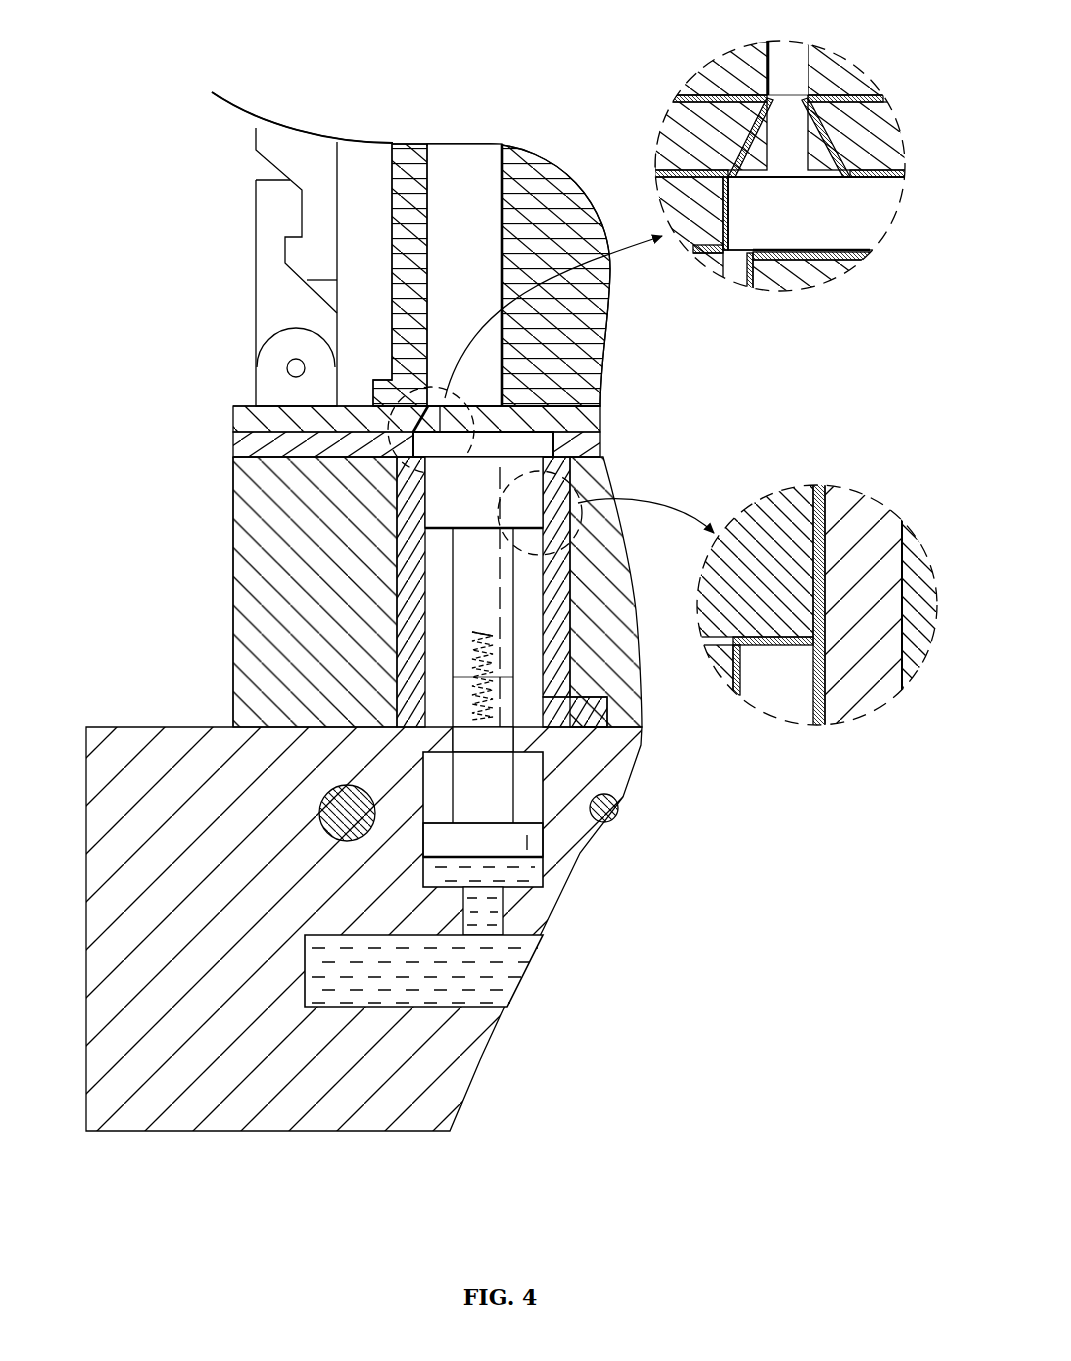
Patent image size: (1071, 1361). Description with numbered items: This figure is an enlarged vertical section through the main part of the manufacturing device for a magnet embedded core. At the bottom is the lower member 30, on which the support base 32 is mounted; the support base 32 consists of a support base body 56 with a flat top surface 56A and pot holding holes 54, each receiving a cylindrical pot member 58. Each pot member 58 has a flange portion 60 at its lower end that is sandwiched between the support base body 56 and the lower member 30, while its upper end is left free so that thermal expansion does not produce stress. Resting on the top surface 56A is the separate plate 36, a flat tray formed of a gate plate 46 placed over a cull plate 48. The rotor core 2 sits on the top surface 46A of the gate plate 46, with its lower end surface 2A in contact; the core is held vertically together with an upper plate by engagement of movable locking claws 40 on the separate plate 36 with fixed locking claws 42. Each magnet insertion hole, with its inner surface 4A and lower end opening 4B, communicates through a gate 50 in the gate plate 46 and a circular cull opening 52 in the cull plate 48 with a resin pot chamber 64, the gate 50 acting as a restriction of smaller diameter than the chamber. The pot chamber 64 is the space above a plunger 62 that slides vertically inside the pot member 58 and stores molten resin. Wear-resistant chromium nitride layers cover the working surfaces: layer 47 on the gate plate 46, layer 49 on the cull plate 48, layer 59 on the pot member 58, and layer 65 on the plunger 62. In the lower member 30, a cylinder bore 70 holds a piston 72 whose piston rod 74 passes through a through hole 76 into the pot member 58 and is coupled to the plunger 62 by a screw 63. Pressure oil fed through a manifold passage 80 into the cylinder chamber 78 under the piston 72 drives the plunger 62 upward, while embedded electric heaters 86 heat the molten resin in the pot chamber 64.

The rotor core 2 is at (590, 220).
The lower end surface 2A is at (600, 413).
The inner surface 4A is at (487, 186).
The opening 4B is at (484, 492).
The lower member 30 is at (110, 776).
The support base 32 is at (230, 645).
The separate plate 36 is at (438, 285).
The movable locking claw 40 is at (256, 236).
The fixed locking claw 42 is at (258, 150).
The gate plate 46 is at (673, 120).
The top surface 46A is at (607, 353).
The chromium nitride layer 47 is at (840, 95).
The cull plate 48 is at (673, 200).
The chromium nitride layer 49 is at (728, 195).
The gate 50 is at (425, 393).
The cull opening 52 is at (513, 428).
The pot holding hole 54 is at (560, 632).
The support base body 56 is at (250, 572).
The top surface 56A is at (600, 425).
The pot member 58 is at (572, 500).
The chromium nitride layer 59 is at (730, 250).
The flange portion 60 is at (597, 713).
The plunger 62 is at (437, 505).
The screw 63 is at (477, 633).
The resin pot chamber 64 is at (830, 250).
The chromium nitride layer 65 is at (830, 258).
The cylinder bore 70 is at (535, 788).
The piston 72 is at (537, 846).
The piston rod 74 is at (507, 774).
The through hole 76 is at (464, 735).
The cylinder chamber 78 is at (528, 878).
The manifold passage 80 is at (347, 1000).
The electric heater 86 is at (323, 810).